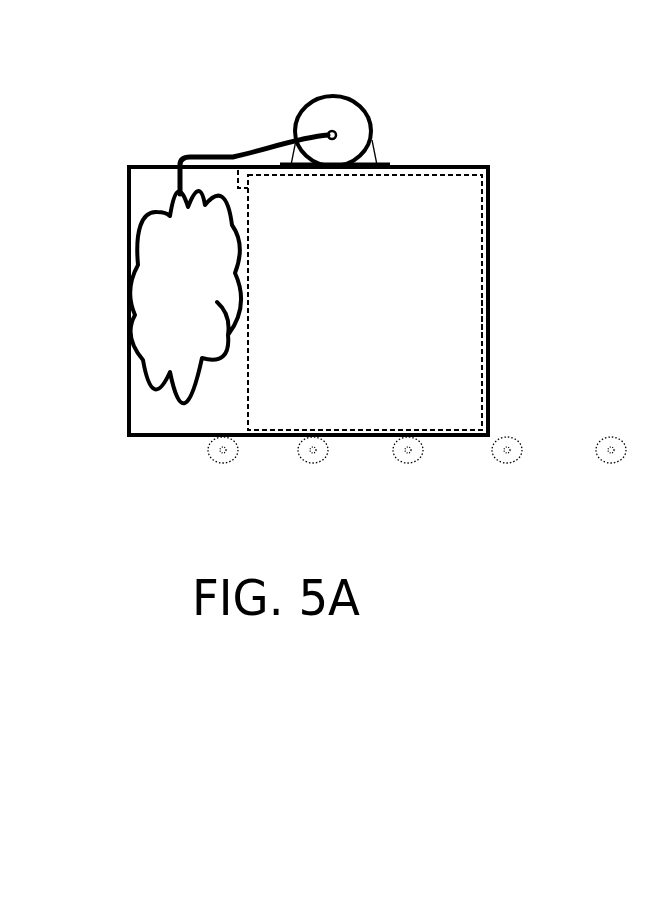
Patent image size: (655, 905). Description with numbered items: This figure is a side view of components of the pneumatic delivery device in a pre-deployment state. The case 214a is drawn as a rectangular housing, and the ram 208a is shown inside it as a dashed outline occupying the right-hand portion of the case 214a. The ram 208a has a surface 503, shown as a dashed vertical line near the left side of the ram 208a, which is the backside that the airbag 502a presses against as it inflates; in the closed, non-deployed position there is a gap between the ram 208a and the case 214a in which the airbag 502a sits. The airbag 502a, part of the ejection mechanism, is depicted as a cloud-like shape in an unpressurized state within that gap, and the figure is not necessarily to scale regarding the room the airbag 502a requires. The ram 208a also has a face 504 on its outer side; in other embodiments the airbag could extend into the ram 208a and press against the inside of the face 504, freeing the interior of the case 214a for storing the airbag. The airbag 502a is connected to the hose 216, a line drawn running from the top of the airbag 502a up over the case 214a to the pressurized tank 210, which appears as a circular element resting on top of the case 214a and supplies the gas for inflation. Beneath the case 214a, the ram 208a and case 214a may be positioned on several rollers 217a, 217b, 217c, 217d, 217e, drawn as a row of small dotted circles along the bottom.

The case 214a is at (127, 195).
The ram 208a is at (435, 207).
The surface 503 is at (248, 355).
The face 504 is at (477, 318).
The airbag 502a is at (178, 243).
The hose 216 is at (220, 154).
The pressurized tank 210 is at (303, 115).
The roller 217a is at (242, 461).
The roller 217b is at (330, 455).
The roller 217c is at (428, 453).
The roller 217d is at (522, 452).
The roller 217e is at (627, 452).